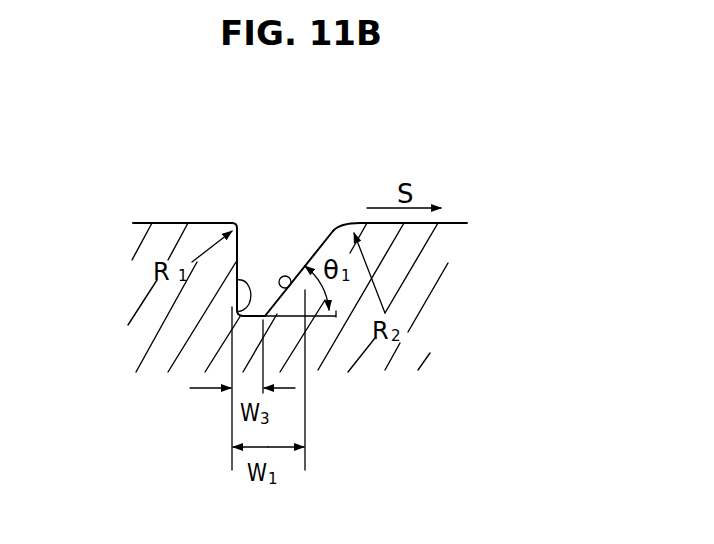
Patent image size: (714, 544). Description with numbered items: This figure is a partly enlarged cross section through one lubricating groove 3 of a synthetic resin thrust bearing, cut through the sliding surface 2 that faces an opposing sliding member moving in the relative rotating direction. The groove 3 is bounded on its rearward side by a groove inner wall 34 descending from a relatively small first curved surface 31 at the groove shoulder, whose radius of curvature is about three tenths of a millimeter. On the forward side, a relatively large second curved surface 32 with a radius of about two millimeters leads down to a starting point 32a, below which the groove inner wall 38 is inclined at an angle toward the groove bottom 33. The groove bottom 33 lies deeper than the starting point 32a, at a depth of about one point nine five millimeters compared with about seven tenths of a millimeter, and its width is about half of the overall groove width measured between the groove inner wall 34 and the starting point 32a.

The sliding surface 2 is at (170, 223).
The lubricating groove 3 is at (283, 224).
The first curved surface 31 is at (235, 226).
The second curved surface 32 is at (336, 229).
The starting point 32a is at (307, 240).
The groove bottom 33 is at (255, 312).
The groove inner wall 34 is at (240, 316).
The groove inner wall 38 is at (288, 290).